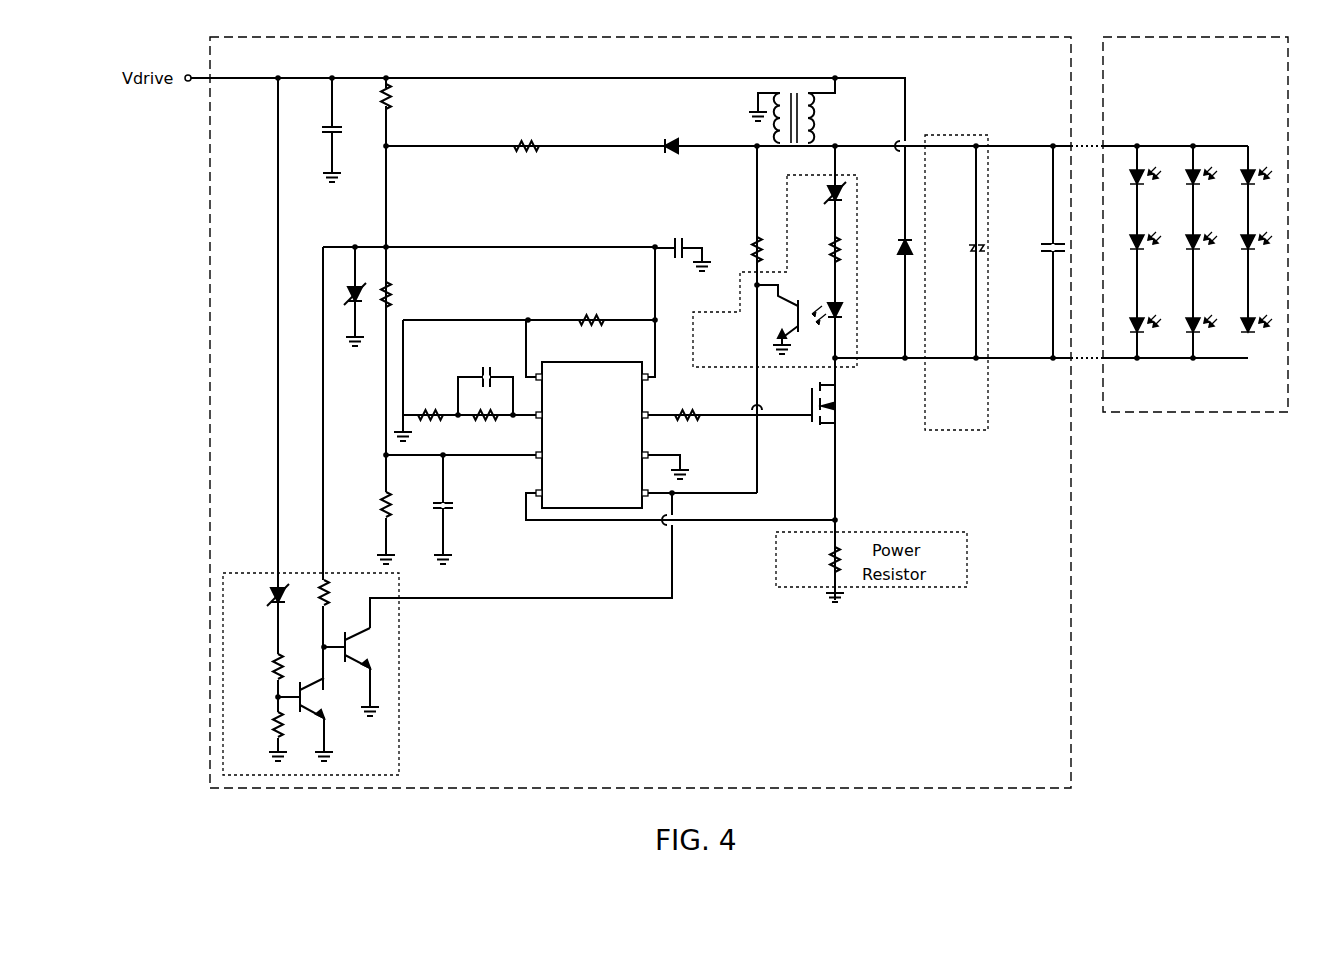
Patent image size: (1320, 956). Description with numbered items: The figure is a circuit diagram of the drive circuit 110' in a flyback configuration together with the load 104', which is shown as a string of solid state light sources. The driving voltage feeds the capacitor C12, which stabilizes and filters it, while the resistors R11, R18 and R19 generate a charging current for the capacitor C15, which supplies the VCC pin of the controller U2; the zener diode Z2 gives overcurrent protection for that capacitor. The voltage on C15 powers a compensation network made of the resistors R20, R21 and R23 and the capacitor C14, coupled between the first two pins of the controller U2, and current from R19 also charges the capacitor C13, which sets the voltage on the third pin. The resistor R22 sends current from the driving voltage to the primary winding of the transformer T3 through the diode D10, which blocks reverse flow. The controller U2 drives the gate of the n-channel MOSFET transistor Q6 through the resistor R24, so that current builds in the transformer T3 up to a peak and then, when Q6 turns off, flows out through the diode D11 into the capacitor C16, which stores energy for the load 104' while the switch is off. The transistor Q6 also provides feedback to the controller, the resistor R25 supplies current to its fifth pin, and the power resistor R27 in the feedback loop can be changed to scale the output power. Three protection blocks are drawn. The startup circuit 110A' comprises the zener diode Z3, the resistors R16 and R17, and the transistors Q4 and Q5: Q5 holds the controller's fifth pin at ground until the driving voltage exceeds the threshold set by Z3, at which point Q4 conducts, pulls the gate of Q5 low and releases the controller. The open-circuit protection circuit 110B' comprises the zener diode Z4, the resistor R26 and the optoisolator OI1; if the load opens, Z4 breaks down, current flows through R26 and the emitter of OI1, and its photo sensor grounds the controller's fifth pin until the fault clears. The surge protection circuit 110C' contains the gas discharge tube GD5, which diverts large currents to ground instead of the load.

The drive circuit 110' is at (640, 412).
The load 104' is at (1195, 224).
The startup circuit 110A' is at (311, 674).
The open-circuit protection circuit 110B' is at (775, 271).
The surge protection circuit 110C' is at (956, 282).
The transformer T3 is at (781, 131).
The controller U2 is at (612, 424).
The transistor Q4 is at (310, 719).
The transistor Q5 is at (355, 672).
The transistor Q6 is at (836, 403).
The optoisolator OI1 is at (799, 328).
The zener diode Z2 is at (347, 296).
The zener diode Z3 is at (263, 619).
The zener diode Z4 is at (819, 194).
The diode D10 is at (668, 136).
The diode D11 is at (886, 251).
The gas discharge tube GD5 is at (956, 252).
The capacitor C12 is at (313, 150).
The capacitor C13 is at (424, 532).
The capacitor C14 is at (484, 367).
The capacitor C15 is at (683, 246).
The capacitor C16 is at (1035, 252).
The resistor R11 is at (370, 528).
The resistor R16 is at (259, 683).
The resistor R17 is at (261, 736).
The resistor R18 is at (402, 102).
The resistor R19 is at (403, 294).
The resistor R20 is at (418, 417).
The resistor R21 is at (481, 427).
The resistor R22 is at (525, 135).
The resistor R23 is at (588, 310).
The resistor R24 is at (687, 405).
The resistor R25 is at (742, 249).
The resistor R26 is at (816, 249).
The power resistor R27 is at (815, 574).